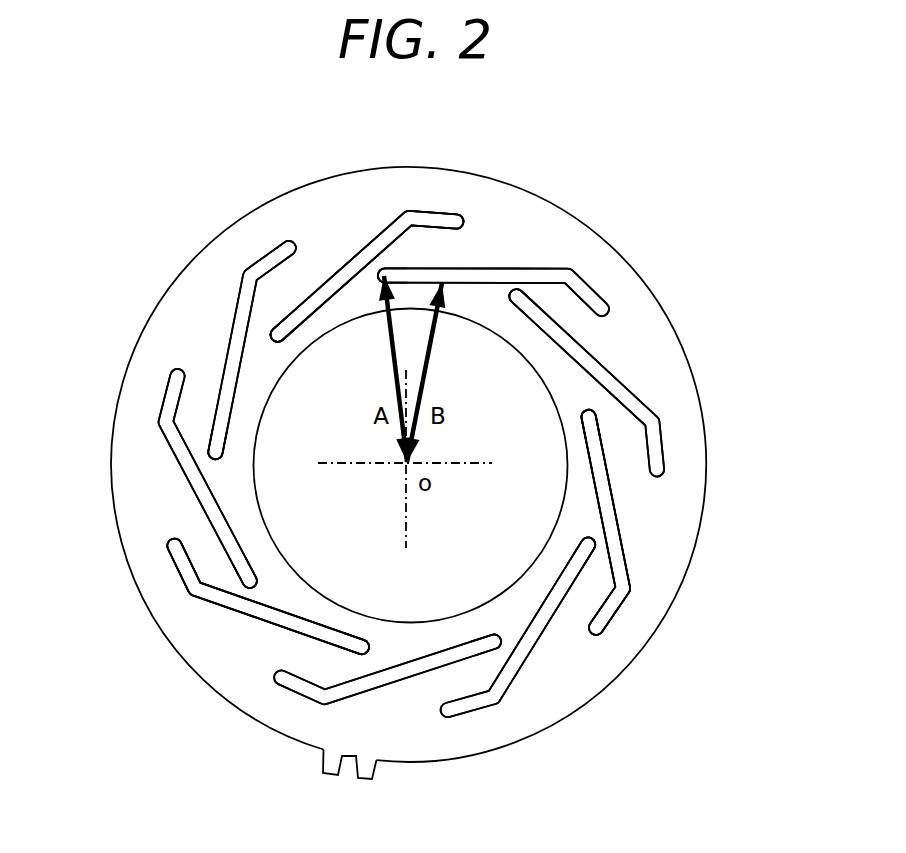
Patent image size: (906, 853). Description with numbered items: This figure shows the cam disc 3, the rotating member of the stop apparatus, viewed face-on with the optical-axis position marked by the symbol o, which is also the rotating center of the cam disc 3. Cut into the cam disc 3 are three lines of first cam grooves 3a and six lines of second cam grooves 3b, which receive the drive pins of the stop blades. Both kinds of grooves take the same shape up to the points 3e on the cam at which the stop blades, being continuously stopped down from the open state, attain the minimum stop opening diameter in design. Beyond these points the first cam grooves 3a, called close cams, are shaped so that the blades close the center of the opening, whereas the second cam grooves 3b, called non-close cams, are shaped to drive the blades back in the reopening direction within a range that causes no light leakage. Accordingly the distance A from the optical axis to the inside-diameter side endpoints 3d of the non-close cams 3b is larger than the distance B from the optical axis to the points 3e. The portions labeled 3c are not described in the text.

The cam disc 3 is at (245, 242).
The first cam grooves 3a is at (428, 210).
The second cam grooves 3b is at (238, 307).
The inner end portion of lever arm 3c is at (284, 340).
The inside-diameter side endpoints 3d is at (382, 283).
The points on the cam 3e is at (313, 300).